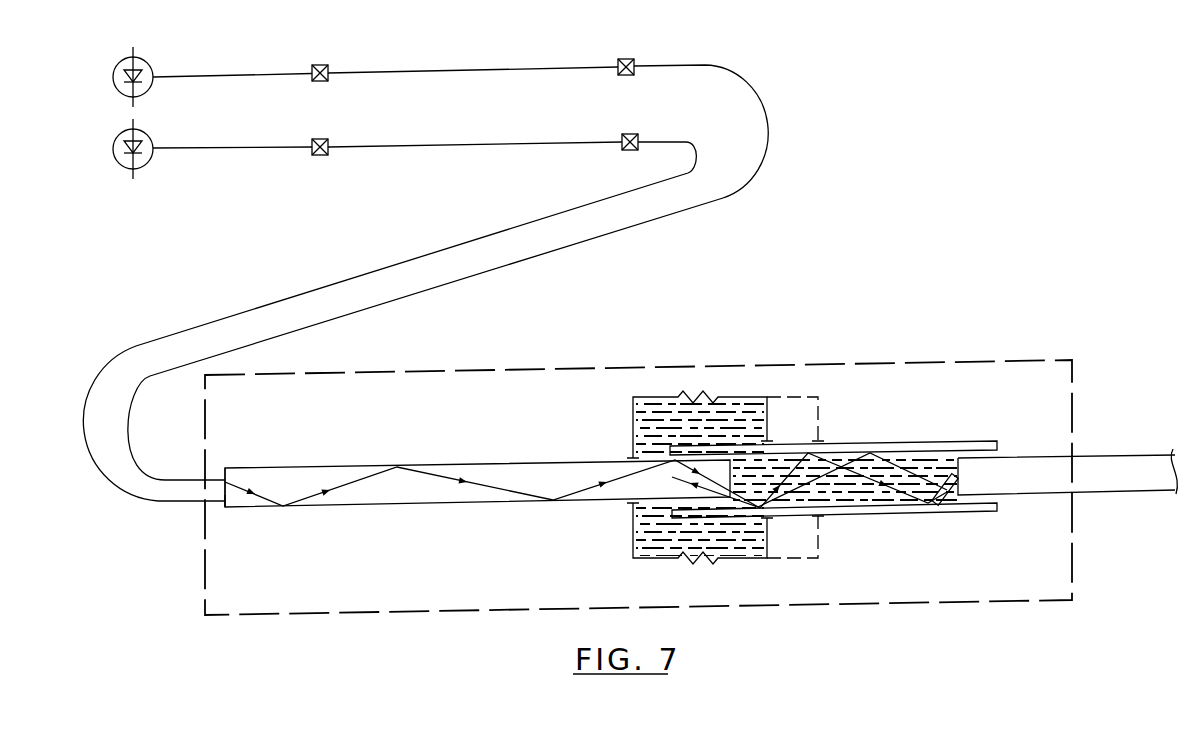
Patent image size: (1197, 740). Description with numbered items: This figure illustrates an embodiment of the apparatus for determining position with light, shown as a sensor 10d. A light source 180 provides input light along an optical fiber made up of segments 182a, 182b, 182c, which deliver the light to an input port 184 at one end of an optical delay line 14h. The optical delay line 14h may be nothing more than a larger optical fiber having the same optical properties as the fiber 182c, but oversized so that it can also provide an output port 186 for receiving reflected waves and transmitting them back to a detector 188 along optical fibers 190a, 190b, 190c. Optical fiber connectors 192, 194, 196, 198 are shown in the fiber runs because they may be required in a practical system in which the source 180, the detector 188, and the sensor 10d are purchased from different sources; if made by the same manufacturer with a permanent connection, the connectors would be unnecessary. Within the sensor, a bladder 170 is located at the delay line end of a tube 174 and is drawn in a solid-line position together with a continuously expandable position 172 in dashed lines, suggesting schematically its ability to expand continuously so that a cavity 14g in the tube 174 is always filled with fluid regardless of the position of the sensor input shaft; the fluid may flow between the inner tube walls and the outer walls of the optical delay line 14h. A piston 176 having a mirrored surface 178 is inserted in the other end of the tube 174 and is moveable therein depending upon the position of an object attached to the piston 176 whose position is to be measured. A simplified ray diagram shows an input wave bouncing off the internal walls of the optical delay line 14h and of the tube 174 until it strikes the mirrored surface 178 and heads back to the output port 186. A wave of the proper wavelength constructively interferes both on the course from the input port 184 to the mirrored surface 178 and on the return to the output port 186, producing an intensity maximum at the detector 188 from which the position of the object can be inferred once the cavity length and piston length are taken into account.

The light source 180 is at (149, 63).
The detector 188 is at (150, 164).
The optical fiber 182a is at (229, 72).
The optical fiber 182b is at (409, 68).
The optical fiber 182c is at (707, 65).
The optical fiber 190a is at (425, 255).
The optical fiber 190b is at (441, 143).
The optical fiber 190c is at (240, 152).
The optical fiber connector 192 is at (323, 65).
The optical fiber connector 194 is at (627, 57).
The optical fiber connector 196 is at (322, 140).
The optical fiber connector 198 is at (631, 133).
The sensor 10d is at (711, 366).
The optical delay line 14h is at (420, 506).
The input port 184 is at (221, 466).
The output port 186 is at (218, 509).
The bladder 170 is at (633, 404).
The continuously expandable position 172 is at (823, 422).
The tube 174 is at (887, 443).
The cavity 14g is at (844, 498).
The piston 176 is at (1141, 425).
The mirrored surface 178 is at (950, 483).